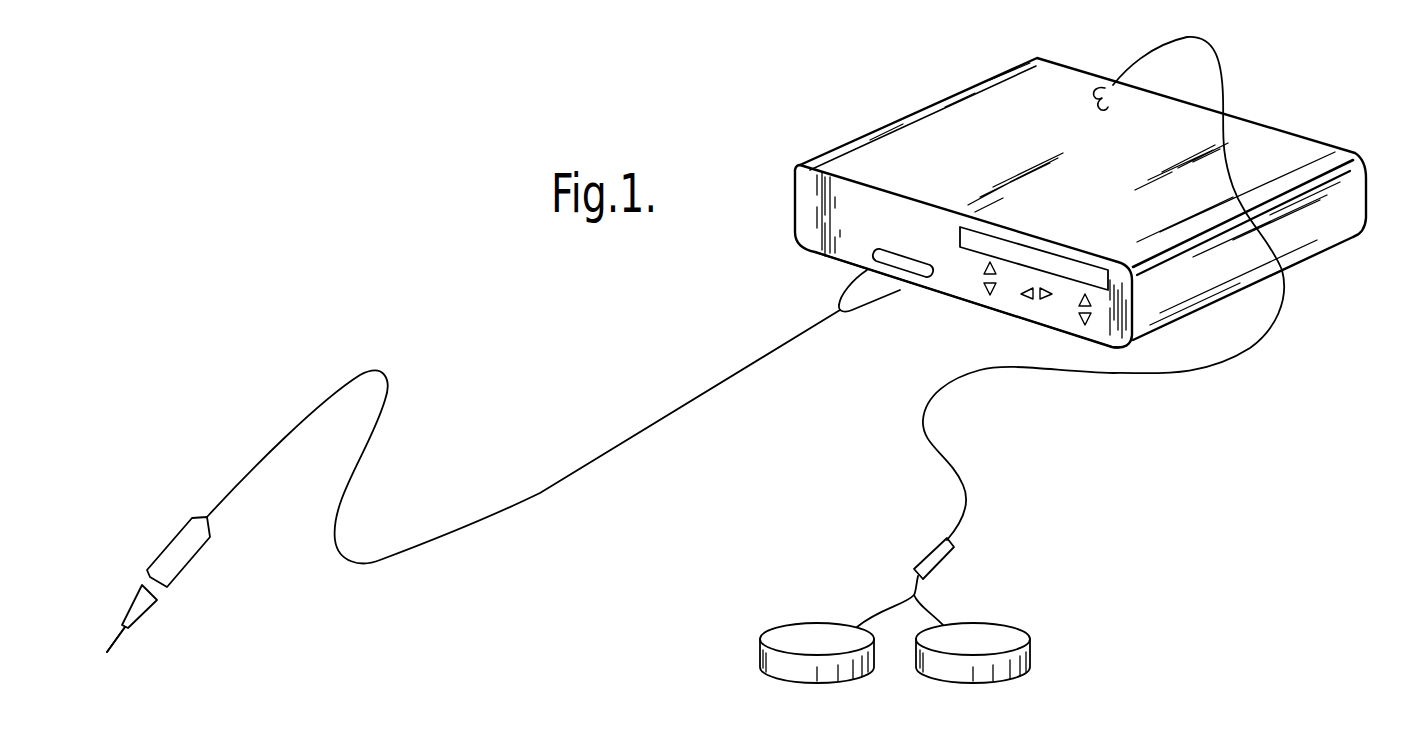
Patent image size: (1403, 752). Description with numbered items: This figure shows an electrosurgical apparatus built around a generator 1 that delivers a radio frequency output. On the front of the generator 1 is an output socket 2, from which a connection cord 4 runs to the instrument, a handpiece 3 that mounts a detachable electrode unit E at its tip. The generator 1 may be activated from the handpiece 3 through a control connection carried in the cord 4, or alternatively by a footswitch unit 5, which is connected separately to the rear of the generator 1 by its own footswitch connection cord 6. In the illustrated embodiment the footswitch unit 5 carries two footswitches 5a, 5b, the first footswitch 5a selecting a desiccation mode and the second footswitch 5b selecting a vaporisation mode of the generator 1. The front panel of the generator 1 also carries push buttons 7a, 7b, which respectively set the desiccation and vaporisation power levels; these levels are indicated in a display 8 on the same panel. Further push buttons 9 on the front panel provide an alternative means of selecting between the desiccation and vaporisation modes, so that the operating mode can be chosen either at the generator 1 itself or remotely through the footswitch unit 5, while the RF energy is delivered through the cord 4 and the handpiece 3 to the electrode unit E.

The generator 1 is at (844, 150).
The output socket 2 is at (868, 252).
The handpiece 3 is at (178, 553).
The connection cord 4 is at (569, 479).
The footswitch unit 5 is at (882, 558).
The footswitch 5a is at (777, 673).
The footswitch 5b is at (1013, 663).
The footswitch connection cord 6 is at (1137, 375).
The push button 7a is at (966, 286).
The push button 7b is at (1083, 345).
The display 8 is at (1053, 254).
The push buttons 9 is at (1038, 305).
The electrode unit E is at (140, 633).